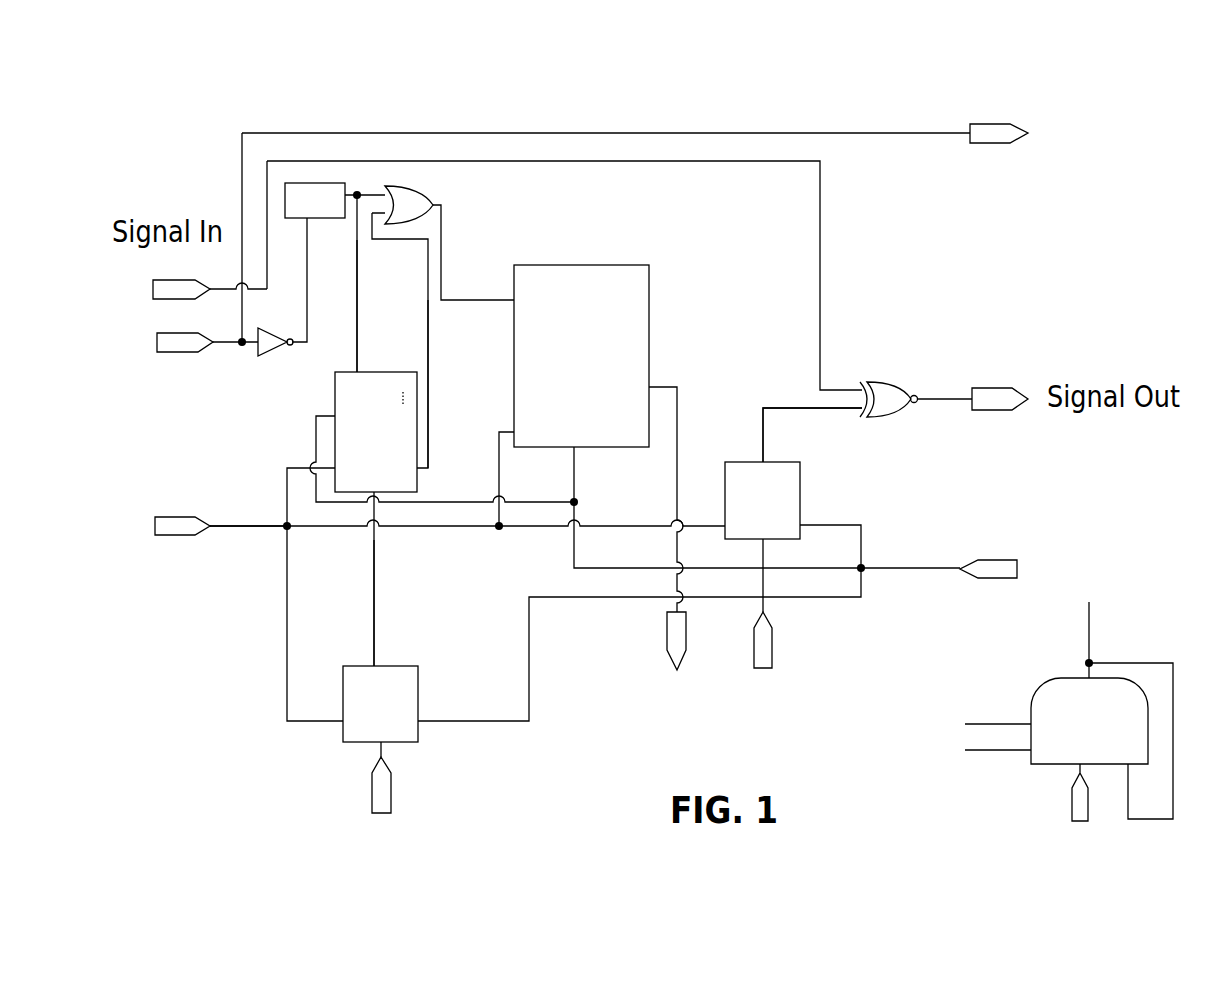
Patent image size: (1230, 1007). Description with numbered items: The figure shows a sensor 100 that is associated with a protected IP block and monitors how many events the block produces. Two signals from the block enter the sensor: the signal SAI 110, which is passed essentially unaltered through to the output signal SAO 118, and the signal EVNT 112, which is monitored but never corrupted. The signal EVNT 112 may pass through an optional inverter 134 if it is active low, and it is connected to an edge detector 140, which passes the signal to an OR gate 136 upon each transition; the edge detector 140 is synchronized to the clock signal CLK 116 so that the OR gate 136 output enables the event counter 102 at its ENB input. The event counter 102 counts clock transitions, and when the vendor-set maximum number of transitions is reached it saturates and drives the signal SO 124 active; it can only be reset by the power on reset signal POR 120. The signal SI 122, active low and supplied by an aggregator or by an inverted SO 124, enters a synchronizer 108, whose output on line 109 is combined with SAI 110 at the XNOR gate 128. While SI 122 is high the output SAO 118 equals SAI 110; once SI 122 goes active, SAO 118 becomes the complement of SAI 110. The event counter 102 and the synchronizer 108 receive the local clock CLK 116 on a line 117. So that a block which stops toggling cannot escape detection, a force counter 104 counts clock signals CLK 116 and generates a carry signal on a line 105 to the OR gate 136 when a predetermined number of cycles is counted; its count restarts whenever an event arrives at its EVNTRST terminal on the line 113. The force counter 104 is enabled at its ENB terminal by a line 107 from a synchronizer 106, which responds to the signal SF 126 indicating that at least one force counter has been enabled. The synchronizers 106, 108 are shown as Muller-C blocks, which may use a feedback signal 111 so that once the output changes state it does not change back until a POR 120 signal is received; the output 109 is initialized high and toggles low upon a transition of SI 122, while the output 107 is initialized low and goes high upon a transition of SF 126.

The sensor 100 is at (1150, 103).
The event counter 102 is at (630, 448).
The force counter 104 is at (335, 398).
The line 105 is at (431, 347).
The synchronizer 106 is at (343, 729).
The line 107 is at (383, 603).
The synchronizer 108 is at (745, 461).
The line 109 is at (765, 446).
The signal SAI 110 is at (153, 289).
The feedback loop 111 is at (1130, 660).
The signal EVNT 112 is at (157, 343).
The line 113 is at (362, 283).
The clock signal CLK 116 is at (155, 530).
The line 117 is at (270, 530).
The output signal SAO 118 is at (1000, 412).
The POR signal 120 is at (1012, 558).
The signal SI 122 is at (752, 658).
The signal SO 124 is at (665, 630).
The signal SF 126 is at (370, 809).
The XNOR gate 128 is at (870, 382).
The inverter 134 is at (258, 352).
The OR gate 136 is at (428, 191).
The edge detector 140 is at (285, 190).